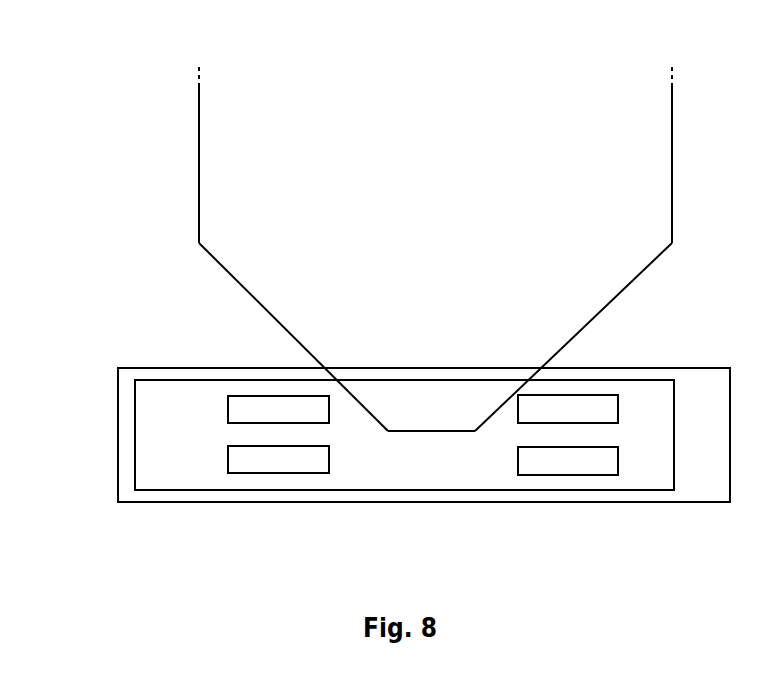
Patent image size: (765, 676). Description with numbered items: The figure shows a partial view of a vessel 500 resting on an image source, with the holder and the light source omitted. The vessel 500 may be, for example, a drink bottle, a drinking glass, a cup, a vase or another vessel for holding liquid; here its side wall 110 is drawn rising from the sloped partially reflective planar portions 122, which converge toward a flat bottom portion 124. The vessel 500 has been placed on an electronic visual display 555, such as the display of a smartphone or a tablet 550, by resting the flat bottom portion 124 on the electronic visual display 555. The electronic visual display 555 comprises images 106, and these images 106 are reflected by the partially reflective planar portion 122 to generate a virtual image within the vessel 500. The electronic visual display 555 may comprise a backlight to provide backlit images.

The vessel 500 is at (503, 85).
The sidewall 110 is at (192, 110).
The partially reflective planar portion 122 is at (435, 337).
The flat bottom portion 124 is at (442, 432).
The tablet 550 is at (118, 422).
The electronic visual display 555 is at (404, 435).
The images 106 is at (423, 435).